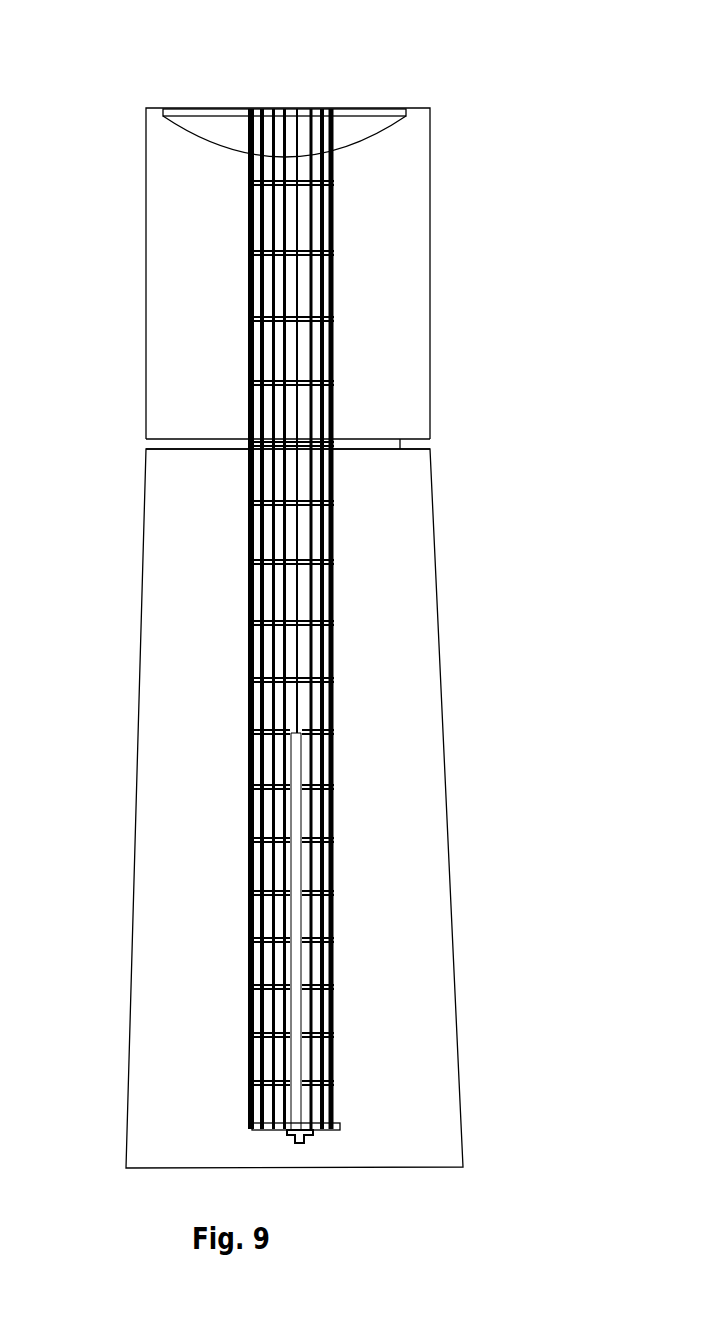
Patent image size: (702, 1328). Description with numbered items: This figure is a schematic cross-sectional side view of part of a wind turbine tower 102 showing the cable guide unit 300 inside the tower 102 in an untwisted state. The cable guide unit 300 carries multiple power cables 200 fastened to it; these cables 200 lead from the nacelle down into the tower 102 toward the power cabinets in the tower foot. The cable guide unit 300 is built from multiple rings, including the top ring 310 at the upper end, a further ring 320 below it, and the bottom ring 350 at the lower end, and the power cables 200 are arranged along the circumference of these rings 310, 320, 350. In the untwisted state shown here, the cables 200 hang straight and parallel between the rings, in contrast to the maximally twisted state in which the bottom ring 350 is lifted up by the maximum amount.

The tower 102 is at (415, 830).
The power cables 200 is at (242, 632).
The cable guide unit 300 is at (260, 96).
The top ring 310 is at (317, 110).
The ring 320 is at (248, 255).
The bottom ring 350 is at (313, 1129).